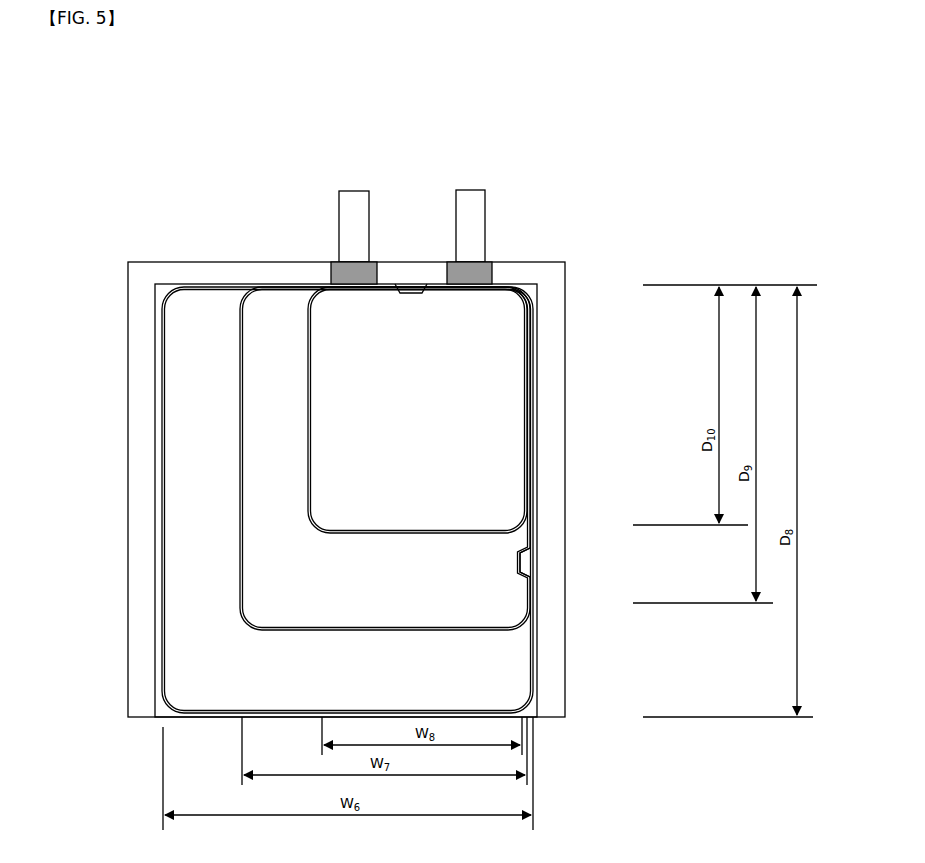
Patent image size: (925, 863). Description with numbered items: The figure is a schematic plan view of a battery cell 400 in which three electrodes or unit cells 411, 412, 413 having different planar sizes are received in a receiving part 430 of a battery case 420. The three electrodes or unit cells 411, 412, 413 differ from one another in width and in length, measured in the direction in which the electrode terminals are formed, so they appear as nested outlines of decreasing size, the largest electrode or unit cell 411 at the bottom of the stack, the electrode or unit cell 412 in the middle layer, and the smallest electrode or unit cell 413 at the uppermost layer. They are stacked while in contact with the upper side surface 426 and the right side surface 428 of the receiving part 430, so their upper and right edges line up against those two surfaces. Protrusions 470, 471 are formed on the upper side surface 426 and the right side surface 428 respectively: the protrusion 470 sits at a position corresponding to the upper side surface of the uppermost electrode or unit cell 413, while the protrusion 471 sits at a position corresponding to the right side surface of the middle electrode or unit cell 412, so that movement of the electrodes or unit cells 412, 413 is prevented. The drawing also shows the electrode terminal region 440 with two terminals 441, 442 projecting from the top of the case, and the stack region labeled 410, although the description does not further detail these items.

The battery cell 400 is at (110, 96).
The electrode assembly 410 is at (534, 360).
The electrode or unit cell 411 is at (513, 668).
The electrode or unit cell 412 is at (495, 587).
The electrode or unit cell 413 is at (503, 460).
The battery case 420 is at (567, 284).
The upper side surface 426 is at (503, 285).
The right side surface 428 is at (533, 405).
The receiving part 430 is at (541, 314).
The electrode leads 440 is at (528, 137).
The first electrode lead 441 is at (355, 203).
The second electrode lead 442 is at (468, 201).
The protrusion 470 is at (413, 292).
The protrusion 471 is at (521, 569).